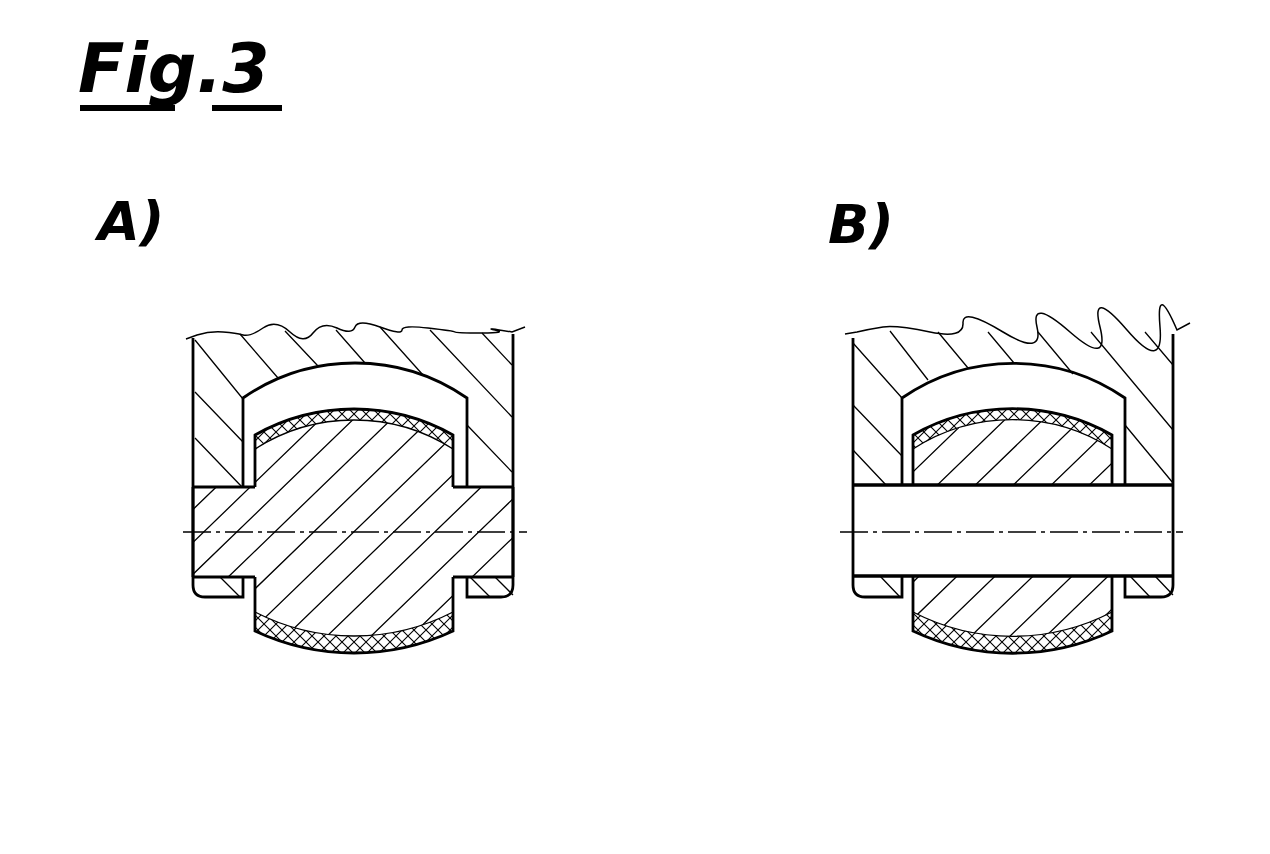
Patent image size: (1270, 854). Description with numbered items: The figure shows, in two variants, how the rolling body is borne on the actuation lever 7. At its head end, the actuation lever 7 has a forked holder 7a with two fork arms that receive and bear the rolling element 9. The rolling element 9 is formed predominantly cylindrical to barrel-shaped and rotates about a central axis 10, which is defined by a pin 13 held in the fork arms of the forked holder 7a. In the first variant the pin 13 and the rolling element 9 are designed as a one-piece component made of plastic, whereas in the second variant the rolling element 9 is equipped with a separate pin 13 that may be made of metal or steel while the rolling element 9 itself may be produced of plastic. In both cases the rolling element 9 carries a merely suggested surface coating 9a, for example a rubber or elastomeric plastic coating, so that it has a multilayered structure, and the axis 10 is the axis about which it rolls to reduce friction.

In FIG. 3A, the actuation lever 7 is at (428, 323).
In FIG. 3B, the actuation lever 7 is at (1125, 323).
In FIG. 3A, the forked holder 7a is at (333, 368).
In FIG. 3B, the forked holder 7a is at (1023, 360).
In FIG. 3A, the rolling element 9 is at (385, 657).
In FIG. 3B, the rolling element 9 is at (1060, 650).
In FIG. 3A, the surface coating 9a is at (330, 656).
In FIG. 3B, the surface coating 9a is at (1007, 653).
In FIG. 3A, the axis 10 is at (494, 530).
In FIG. 3B, the axis 10 is at (1145, 530).
In FIG. 3A, the pin 13 is at (214, 558).
In FIG. 3B, the pin 13 is at (863, 558).